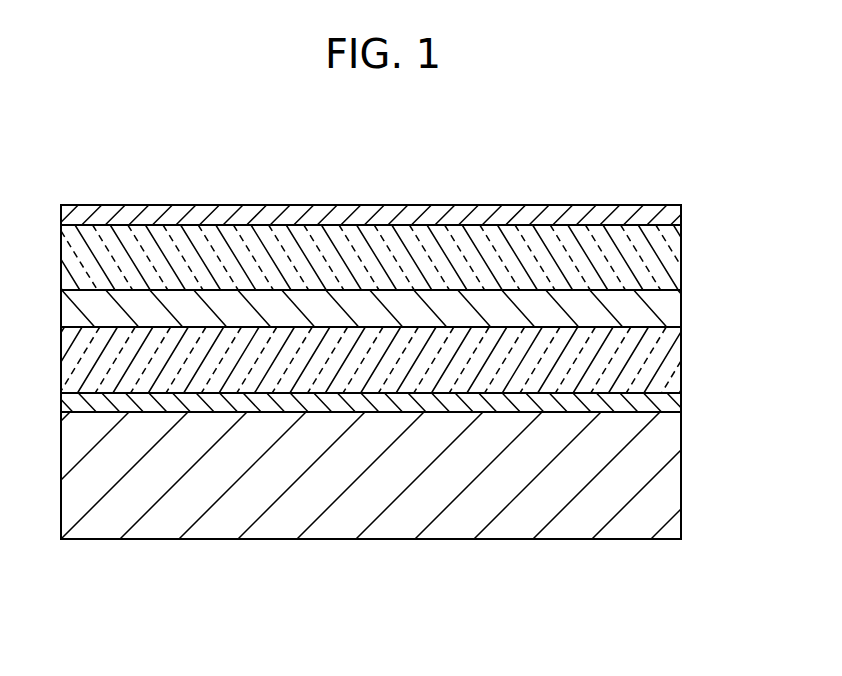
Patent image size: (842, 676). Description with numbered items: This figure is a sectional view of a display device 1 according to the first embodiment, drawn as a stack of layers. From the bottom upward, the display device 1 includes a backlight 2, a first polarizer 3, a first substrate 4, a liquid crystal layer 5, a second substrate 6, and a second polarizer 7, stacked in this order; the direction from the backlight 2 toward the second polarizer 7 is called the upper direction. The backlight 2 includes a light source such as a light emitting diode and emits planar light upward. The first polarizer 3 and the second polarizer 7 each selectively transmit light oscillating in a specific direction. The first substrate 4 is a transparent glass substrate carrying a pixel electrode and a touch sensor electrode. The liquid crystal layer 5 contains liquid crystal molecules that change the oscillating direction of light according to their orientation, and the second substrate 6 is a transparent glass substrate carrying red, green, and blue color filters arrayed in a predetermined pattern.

The display device 1 is at (692, 638).
The backlight 2 is at (665, 479).
The first polarizer 3 is at (663, 399).
The first substrate 4 is at (666, 354).
The liquid crystal layer 5 is at (665, 303).
The second substrate 6 is at (667, 250).
The second polarizer 7 is at (667, 217).